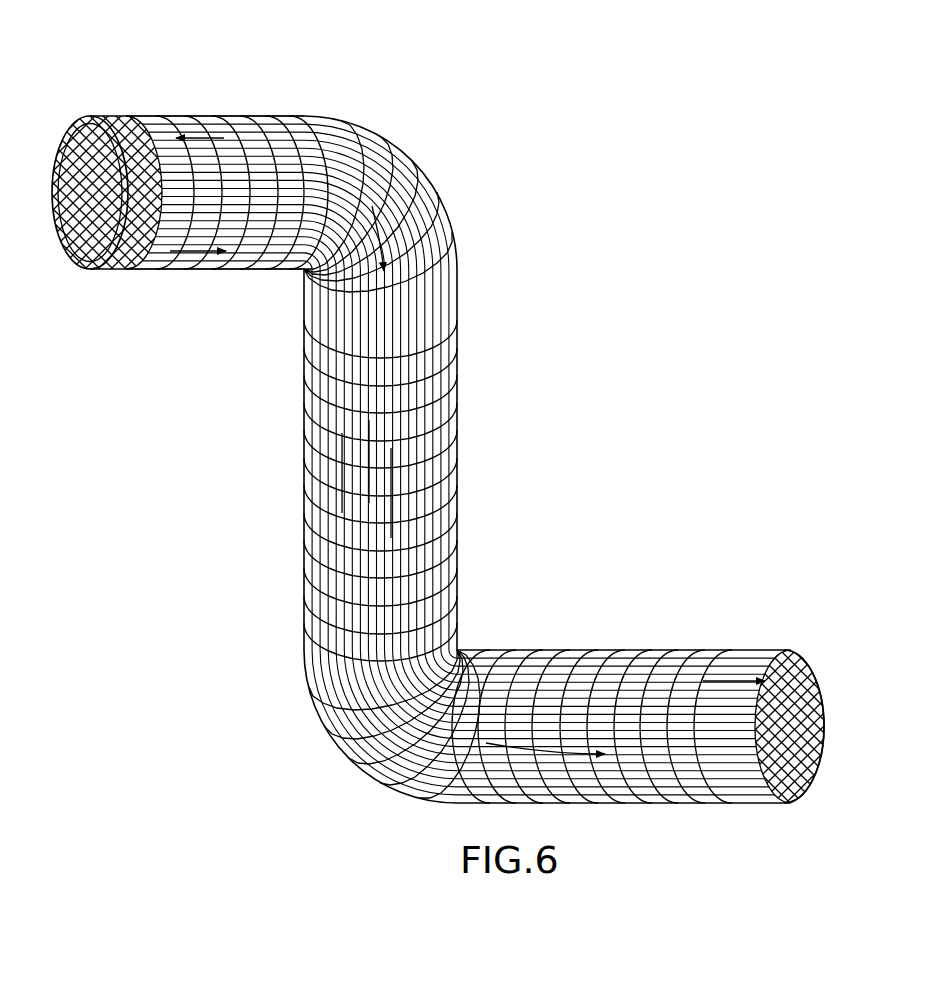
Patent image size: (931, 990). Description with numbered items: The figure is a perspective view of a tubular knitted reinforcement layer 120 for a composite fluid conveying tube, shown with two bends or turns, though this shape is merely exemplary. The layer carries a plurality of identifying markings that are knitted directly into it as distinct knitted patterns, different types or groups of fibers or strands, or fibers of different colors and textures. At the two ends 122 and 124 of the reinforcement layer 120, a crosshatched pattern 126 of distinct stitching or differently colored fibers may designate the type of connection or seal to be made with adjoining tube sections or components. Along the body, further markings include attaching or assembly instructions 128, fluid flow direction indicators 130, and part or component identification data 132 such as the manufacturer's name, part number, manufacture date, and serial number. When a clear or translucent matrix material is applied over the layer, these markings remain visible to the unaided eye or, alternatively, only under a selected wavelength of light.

The knitted reinforcement layer 120 is at (487, 222).
The end 122 is at (81, 108).
The end 124 is at (801, 650).
The crosshatched pattern 126 is at (128, 122).
The attaching or assembly instructions 128 is at (213, 157).
The fluid flow direction indicators 130 is at (355, 215).
The part or component identification data 132 is at (372, 333).